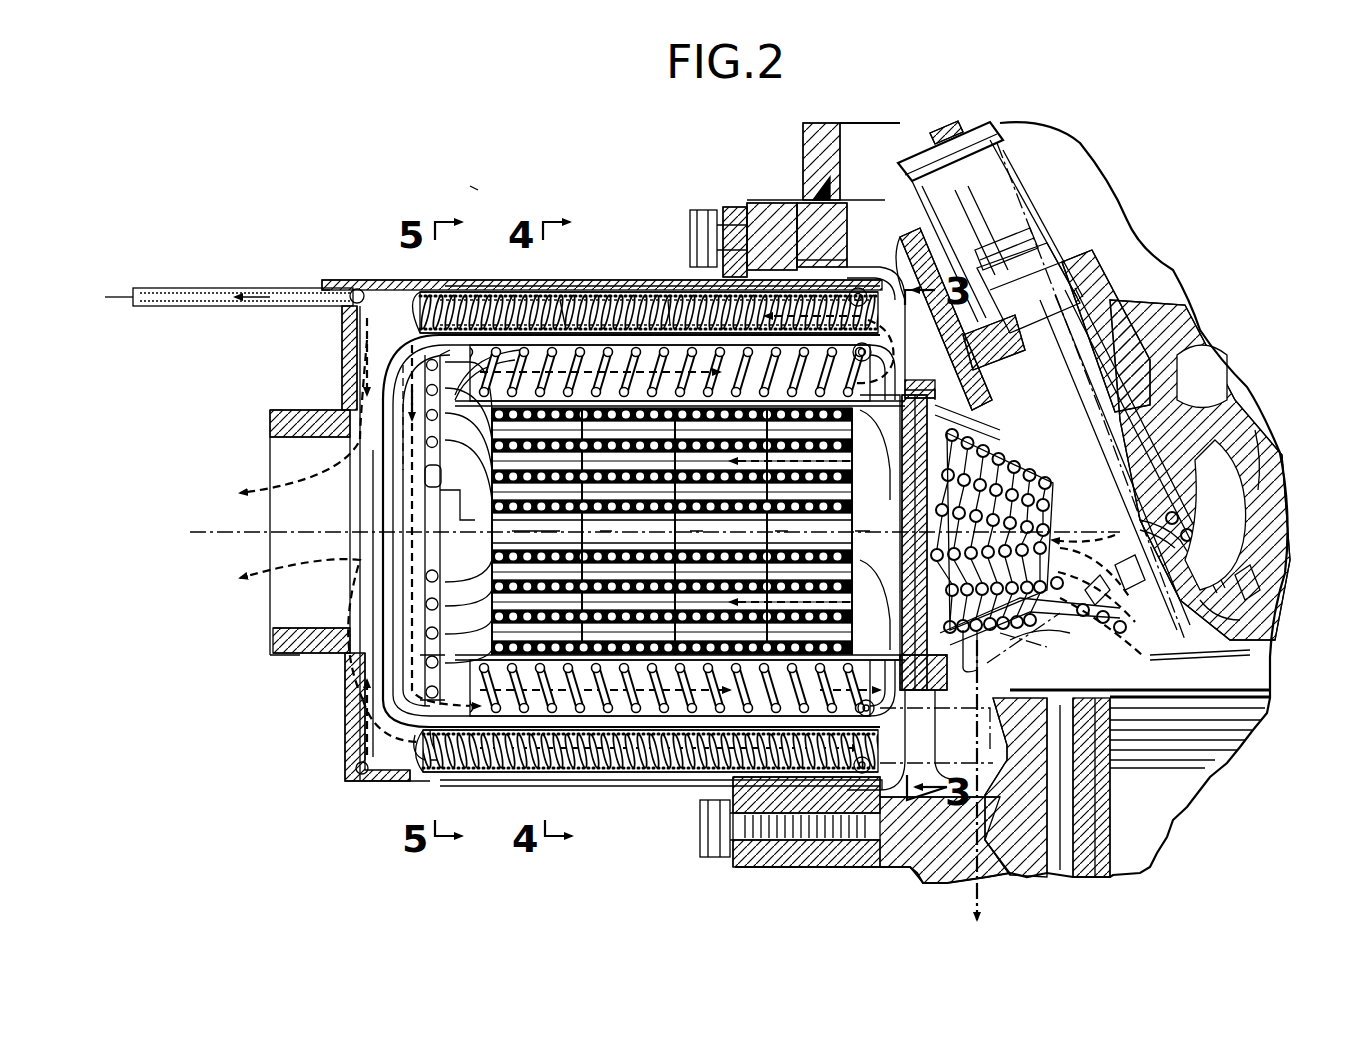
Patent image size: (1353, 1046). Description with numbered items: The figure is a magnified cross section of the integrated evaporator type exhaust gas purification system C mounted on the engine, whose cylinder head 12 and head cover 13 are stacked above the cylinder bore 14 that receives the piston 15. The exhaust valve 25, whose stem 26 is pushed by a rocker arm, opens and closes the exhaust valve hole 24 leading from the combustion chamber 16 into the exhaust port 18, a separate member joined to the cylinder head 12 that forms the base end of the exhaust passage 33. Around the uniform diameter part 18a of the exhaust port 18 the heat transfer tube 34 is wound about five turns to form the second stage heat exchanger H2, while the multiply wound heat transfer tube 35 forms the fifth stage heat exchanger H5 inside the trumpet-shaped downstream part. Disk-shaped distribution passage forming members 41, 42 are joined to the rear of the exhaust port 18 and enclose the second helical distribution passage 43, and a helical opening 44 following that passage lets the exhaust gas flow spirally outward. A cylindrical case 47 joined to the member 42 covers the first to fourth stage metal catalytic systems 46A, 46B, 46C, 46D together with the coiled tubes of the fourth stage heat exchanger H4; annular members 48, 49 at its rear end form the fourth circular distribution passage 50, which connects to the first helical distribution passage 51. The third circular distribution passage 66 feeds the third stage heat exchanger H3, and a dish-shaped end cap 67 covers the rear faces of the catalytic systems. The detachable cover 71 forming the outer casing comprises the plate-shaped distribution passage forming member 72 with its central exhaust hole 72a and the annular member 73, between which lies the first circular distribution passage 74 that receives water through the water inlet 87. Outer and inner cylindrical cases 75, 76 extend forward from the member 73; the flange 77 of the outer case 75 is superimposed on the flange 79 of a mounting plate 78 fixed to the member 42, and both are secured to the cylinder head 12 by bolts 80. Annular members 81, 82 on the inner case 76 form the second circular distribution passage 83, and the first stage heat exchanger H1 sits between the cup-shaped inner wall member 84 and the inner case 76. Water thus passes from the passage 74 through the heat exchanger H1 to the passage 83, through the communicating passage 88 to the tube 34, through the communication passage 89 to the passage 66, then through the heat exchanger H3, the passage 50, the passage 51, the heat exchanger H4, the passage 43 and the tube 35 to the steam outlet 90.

The cylinder head 12 is at (860, 865).
The head cover 13 is at (845, 155).
The cylinder bore 14 is at (1110, 833).
The piston 15 is at (1195, 795).
The combustion chamber 16 is at (1220, 645).
The exhaust port 18 is at (963, 775).
The uniform diameter part 18a is at (1100, 478).
The exhaust valve hole 24 is at (1240, 625).
The exhaust valve 25 is at (1200, 650).
The stem 26 is at (1105, 348).
The exhaust passage 33 is at (628, 280).
The heat transfer tube 34 is at (1215, 445).
The heat transfer tube 35 is at (1020, 560).
The distribution passage forming member 41 is at (905, 375).
The distribution passage forming member 42 is at (880, 345).
The second helical distribution passage 43 is at (905, 570).
The helical opening 44 is at (905, 532).
The first stage metal catalytic system 46A is at (672, 531).
The second stage metal catalytic system 46B is at (672, 531).
The third stage metal catalytic system 46C is at (672, 531).
The fourth stage metal catalytic system 46D is at (672, 531).
The cylindrical case 47 is at (452, 670).
The annular distribution passage forming member 48 is at (445, 395).
The annular distribution passage forming member 49 is at (405, 398).
The fourth circular distribution passage 50 is at (427, 357).
The first helical distribution passage 51 is at (425, 470).
The third circular distribution passage 66 is at (862, 362).
The end cap 67 is at (418, 560).
The cover 71 is at (645, 282).
The distribution passage forming member 72 is at (340, 330).
The exhaust hole 72a is at (342, 440).
The annular distribution passage forming member 73 is at (385, 284).
The first circular distribution passage 74 is at (352, 290).
The cylindrical case 75 is at (466, 290).
The cylindrical case 76 is at (532, 290).
The flange 77 is at (735, 207).
The mounting plate 78 is at (915, 262).
The flange 79 is at (772, 203).
The bolts 80 is at (697, 210).
The annular distribution passage forming member 81 is at (822, 235).
The annular distribution passage forming member 82 is at (877, 265).
The second circular distribution passage 83 is at (860, 288).
The inner wall member 84 is at (378, 390).
The water inlet 87 is at (215, 292).
The communicating passage 88 is at (1020, 800).
The communication passage 89 is at (1110, 790).
The steam outlet 90 is at (975, 840).
The integrated evaporator type exhaust gas purification system C is at (478, 185).
The first stage heat exchanger H1 is at (565, 290).
The second stage heat exchanger H2 is at (1262, 425).
The third stage heat exchanger H3 is at (670, 292).
The fourth stage heat exchanger H4 is at (470, 548).
The fifth stage heat exchanger H5 is at (990, 440).